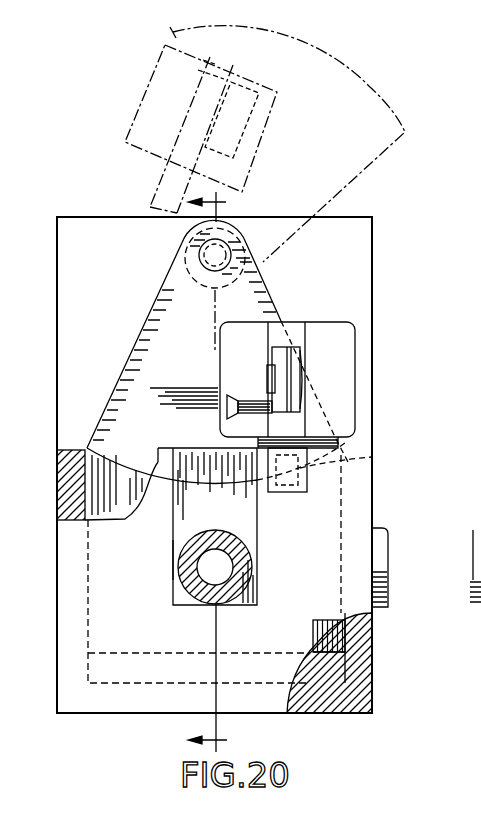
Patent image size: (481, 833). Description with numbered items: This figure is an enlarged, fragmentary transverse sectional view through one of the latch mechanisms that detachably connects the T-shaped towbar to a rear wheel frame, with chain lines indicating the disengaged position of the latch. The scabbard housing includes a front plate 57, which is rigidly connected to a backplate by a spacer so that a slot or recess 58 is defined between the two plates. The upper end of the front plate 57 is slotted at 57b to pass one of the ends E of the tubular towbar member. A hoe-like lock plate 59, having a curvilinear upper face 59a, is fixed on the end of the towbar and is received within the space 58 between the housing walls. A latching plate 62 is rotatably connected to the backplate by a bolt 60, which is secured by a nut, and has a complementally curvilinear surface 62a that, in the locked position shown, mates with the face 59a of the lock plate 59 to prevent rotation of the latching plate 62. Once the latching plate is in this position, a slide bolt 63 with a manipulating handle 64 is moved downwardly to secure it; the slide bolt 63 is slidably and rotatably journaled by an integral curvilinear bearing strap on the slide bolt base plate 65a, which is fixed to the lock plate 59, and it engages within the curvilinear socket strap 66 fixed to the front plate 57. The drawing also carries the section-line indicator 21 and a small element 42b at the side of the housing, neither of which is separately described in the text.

The front plate 57 is at (352, 508).
The latching plate 62 is at (379, 98).
The bolt 60 is at (188, 269).
The slide bolt base plate 65a is at (322, 333).
The slide bolt 63 is at (283, 360).
The manipulating handle 64 is at (245, 428).
The curvilinear socket strap 66 is at (291, 492).
The lock plate 59 is at (247, 520).
The curvilinear upper face 59a is at (192, 481).
The curvilinear surface 62a is at (117, 476).
The slot 57b is at (173, 557).
The end of towbar member E is at (190, 587).
The slot or recess 58 is at (309, 680).
The tab 42b is at (383, 548).
The section line 21 is at (223, 472).